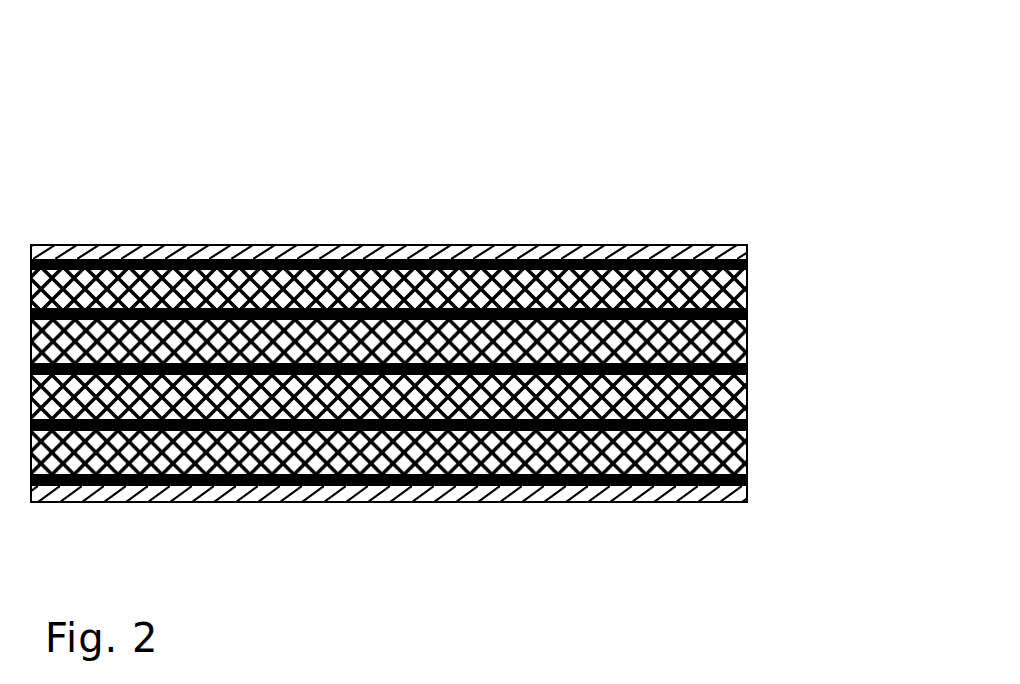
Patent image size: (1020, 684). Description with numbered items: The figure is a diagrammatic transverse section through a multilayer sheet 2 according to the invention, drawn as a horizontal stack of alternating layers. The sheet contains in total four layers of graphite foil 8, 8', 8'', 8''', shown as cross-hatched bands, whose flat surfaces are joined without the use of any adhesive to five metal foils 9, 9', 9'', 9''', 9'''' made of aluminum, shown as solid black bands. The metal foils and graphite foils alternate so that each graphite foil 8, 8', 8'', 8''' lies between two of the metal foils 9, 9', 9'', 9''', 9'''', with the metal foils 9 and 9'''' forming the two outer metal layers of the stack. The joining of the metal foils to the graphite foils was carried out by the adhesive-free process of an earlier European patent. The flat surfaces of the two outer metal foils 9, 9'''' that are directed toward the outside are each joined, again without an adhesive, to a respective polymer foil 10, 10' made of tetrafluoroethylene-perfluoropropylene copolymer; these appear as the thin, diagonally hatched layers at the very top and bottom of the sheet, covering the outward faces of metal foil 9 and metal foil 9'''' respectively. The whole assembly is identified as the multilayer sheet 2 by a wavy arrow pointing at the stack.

The multilayer sheet 2 is at (378, 222).
The polymer foil 10 is at (462, 211).
The polymer foil 10' is at (464, 542).
The metal foil 9 is at (430, 257).
The metal foil 9' is at (433, 320).
The metal foil 9'' is at (436, 377).
The metal foil 9''' is at (439, 431).
The metal foil 9'''' is at (442, 490).
The graphite foil 8 is at (453, 290).
The graphite foil 8' is at (456, 341).
The graphite foil 8'' is at (459, 397).
The graphite foil 8''' is at (462, 452).